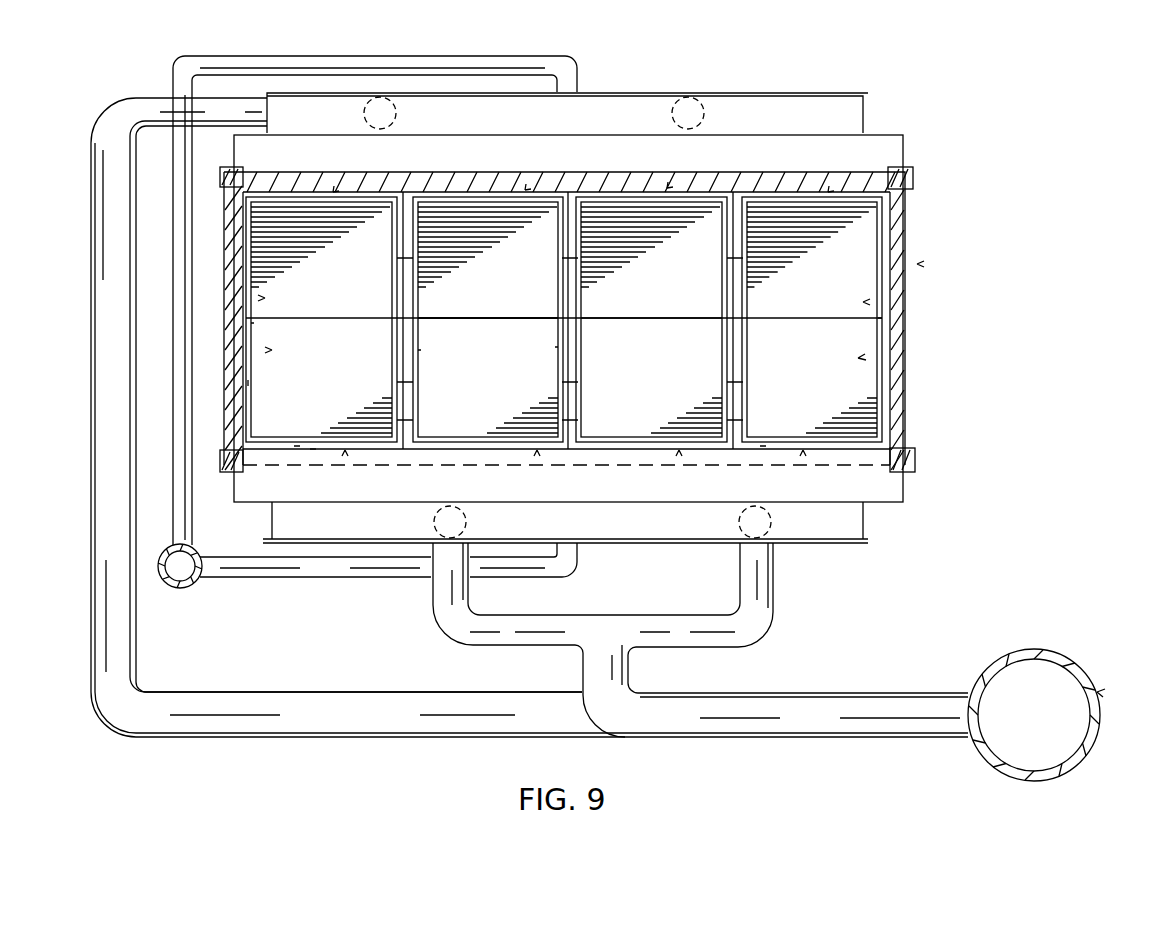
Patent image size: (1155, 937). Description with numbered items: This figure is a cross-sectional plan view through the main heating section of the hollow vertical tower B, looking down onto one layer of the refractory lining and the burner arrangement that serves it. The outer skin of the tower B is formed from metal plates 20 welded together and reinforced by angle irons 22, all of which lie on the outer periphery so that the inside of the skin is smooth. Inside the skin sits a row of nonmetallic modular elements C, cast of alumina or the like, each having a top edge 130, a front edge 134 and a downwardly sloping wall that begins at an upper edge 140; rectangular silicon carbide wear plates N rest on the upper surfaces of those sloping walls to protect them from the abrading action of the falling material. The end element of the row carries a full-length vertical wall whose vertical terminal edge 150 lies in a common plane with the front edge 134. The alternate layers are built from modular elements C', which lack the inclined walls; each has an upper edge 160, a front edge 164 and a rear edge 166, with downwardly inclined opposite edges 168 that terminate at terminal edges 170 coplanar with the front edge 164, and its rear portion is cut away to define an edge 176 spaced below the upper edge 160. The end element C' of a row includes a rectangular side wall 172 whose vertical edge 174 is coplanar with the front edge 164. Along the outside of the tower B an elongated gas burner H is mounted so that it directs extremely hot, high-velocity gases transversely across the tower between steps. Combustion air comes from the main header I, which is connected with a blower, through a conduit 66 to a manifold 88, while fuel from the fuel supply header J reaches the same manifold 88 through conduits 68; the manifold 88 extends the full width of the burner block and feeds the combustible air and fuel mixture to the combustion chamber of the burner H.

The conduit 66 is at (235, 110).
The conduit 68 is at (348, 578).
The manifold 88 is at (780, 105).
The gas burner H is at (912, 150).
The metal plate 20 is at (224, 270).
The angle iron 22 is at (220, 180).
The upper edge 140 is at (288, 196).
The top edge 130 is at (560, 237).
The vertical terminal edge 150 is at (246, 318).
The front edge 164 is at (560, 317).
The front edge 134 is at (725, 322).
The terminal edge 170 is at (488, 296).
The downwardly inclined opposite edge 168 is at (560, 347).
The upper edge 160 is at (560, 393).
The vertical edge 174 is at (252, 325).
The rectangular side wall 172 is at (248, 383).
The edge 176 is at (297, 448).
The rear edge 166 is at (313, 450).
The wear plate N is at (272, 350).
The tower B is at (917, 264).
The modular element C is at (576, 166).
The modular element C' is at (584, 472).
The fuel supply header J is at (190, 588).
The main header I is at (1097, 692).